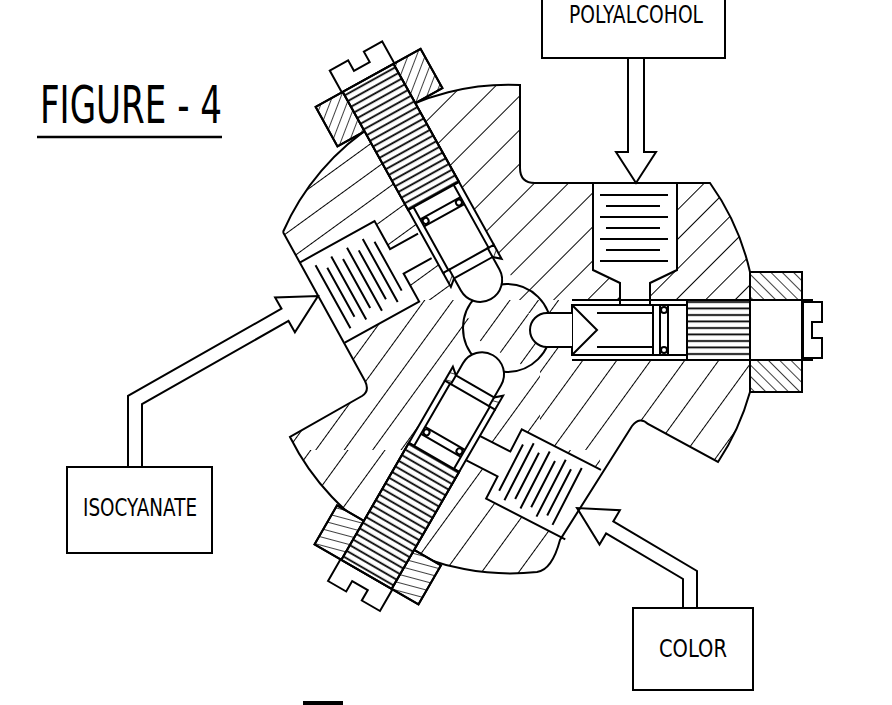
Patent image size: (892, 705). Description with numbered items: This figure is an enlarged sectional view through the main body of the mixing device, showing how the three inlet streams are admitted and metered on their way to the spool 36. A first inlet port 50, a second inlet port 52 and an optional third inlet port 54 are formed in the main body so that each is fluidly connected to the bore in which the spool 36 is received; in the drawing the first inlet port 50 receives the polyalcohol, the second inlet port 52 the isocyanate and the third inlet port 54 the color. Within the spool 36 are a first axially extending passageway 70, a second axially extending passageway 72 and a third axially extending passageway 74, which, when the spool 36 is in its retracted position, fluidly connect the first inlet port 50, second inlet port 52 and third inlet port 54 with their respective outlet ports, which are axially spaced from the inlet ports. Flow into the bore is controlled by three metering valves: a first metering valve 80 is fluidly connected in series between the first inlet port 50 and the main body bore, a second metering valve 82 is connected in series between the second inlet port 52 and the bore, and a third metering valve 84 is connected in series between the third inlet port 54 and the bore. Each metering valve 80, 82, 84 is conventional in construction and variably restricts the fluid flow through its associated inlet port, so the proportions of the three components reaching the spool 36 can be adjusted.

The spool 36 is at (538, 368).
The first inlet port 50 is at (676, 216).
The second inlet port 52 is at (327, 251).
The third inlet port 54 is at (545, 530).
The first axially extending passageway 70 is at (531, 312).
The second axially extending passageway 72 is at (483, 321).
The third axially extending passageway 74 is at (480, 338).
The first metering valve 80 is at (801, 262).
The second metering valve 82 is at (334, 55).
The third metering valve 84 is at (390, 614).